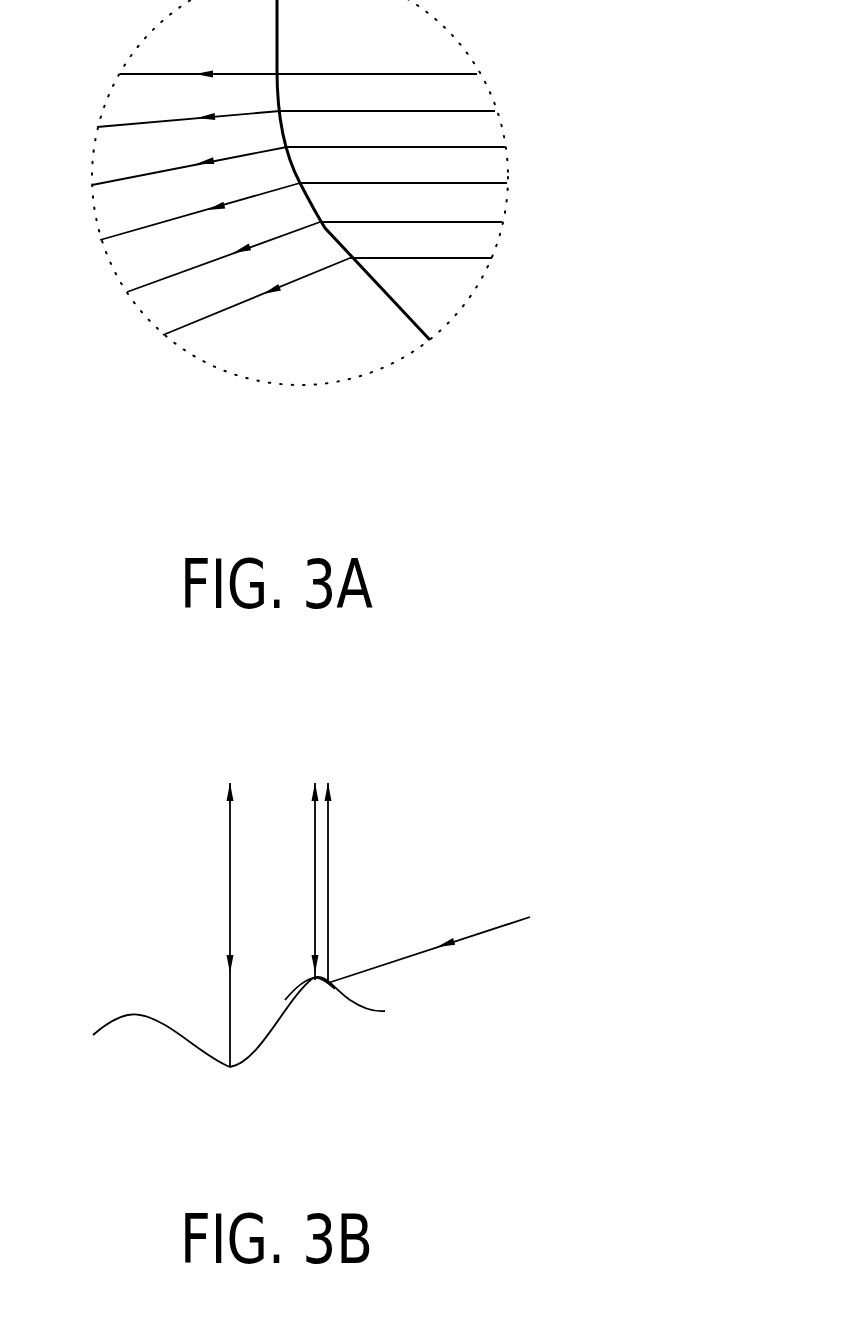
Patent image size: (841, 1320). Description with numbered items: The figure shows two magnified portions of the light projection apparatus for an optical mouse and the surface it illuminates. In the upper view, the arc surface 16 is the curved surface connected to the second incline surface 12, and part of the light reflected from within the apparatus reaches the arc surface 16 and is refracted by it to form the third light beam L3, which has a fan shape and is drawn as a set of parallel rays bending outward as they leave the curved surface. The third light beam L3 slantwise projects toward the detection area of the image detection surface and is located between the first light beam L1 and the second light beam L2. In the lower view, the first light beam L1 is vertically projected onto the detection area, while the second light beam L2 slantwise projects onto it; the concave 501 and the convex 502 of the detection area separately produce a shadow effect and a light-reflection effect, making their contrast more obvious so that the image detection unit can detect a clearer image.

In FIG. 3A, the second incline surface 12 is at (407, 318).
In FIG. 3A, the arc surface 16 is at (307, 203).
In FIG. 3A, the third light beam L3 is at (148, 176).
In FIG. 3B, the concave 501 is at (200, 1053).
In FIG. 3B, the convex 502 is at (300, 985).
In FIG. 3B, the first light beam L1 is at (315, 860).
In FIG. 3B, the second light beam L2 is at (480, 935).